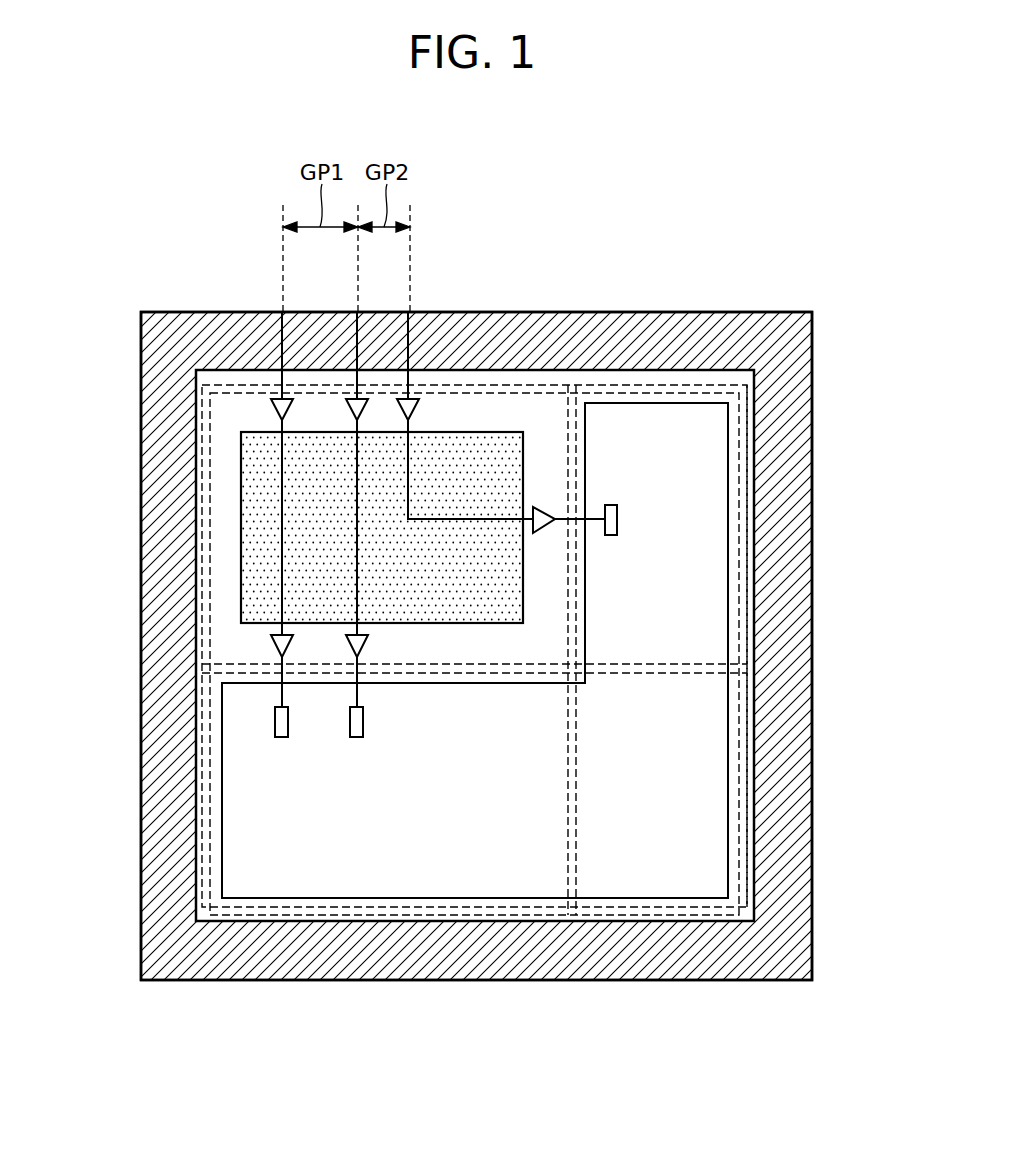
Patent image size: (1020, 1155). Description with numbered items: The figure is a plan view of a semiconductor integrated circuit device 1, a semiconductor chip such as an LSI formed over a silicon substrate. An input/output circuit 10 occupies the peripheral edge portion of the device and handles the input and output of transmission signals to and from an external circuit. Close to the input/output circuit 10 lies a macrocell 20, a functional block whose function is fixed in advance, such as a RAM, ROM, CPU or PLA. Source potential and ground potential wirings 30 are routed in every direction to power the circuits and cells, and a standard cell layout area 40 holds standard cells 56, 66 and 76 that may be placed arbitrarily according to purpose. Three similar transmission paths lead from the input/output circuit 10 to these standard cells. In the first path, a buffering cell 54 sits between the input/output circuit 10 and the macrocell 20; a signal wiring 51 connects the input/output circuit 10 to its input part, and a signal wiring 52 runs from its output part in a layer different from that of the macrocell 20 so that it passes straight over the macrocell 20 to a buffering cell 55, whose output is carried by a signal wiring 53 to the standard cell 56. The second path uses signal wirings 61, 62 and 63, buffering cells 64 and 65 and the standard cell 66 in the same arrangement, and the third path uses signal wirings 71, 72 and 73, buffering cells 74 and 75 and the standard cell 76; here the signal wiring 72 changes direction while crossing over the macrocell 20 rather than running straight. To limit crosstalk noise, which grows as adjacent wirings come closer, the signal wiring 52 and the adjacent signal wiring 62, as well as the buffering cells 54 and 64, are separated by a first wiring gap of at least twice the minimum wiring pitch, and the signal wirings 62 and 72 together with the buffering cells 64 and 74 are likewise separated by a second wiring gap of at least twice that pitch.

The semiconductor integrated circuit device 1 is at (750, 313).
The input/output circuit 10 is at (170, 447).
The macrocell 20 is at (247, 512).
The source potential and ground potential wirings 30 is at (752, 562).
The standard cell layout area 40 is at (727, 775).
The signal wiring 51 is at (282, 378).
The signal wiring 52 is at (280, 556).
The signal wiring 53 is at (282, 688).
The buffering cell 54 is at (271, 408).
The buffering cell 55 is at (271, 647).
The standard cell 56 is at (282, 738).
The signal wiring 61 is at (357, 376).
The signal wiring 62 is at (355, 598).
The signal wiring 63 is at (355, 697).
The buffering cell 64 is at (346, 408).
The buffering cell 65 is at (367, 647).
The standard cell 66 is at (357, 738).
The signal wiring 71 is at (410, 376).
The signal wiring 72 is at (455, 510).
The signal wiring 73 is at (593, 524).
The buffering cell 74 is at (419, 407).
The buffering cell 75 is at (548, 505).
The standard cell 76 is at (611, 505).